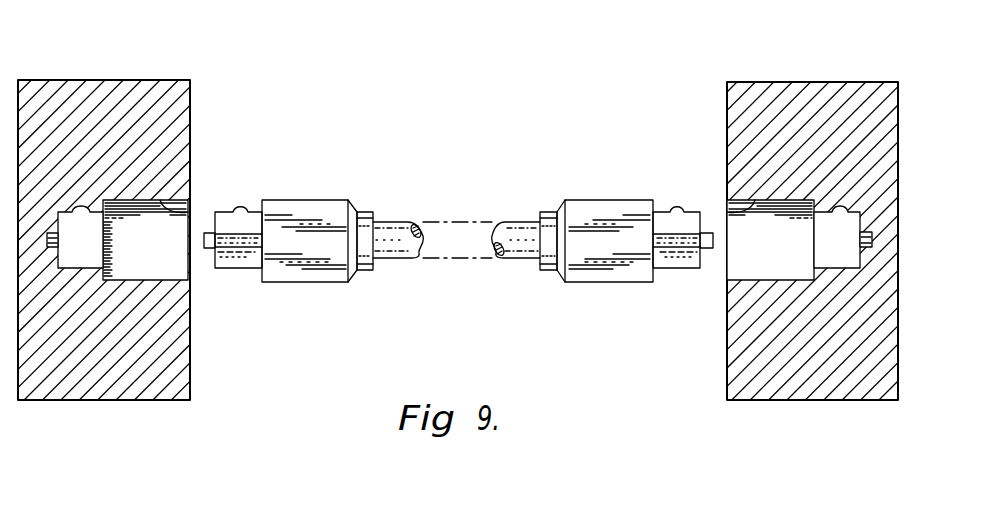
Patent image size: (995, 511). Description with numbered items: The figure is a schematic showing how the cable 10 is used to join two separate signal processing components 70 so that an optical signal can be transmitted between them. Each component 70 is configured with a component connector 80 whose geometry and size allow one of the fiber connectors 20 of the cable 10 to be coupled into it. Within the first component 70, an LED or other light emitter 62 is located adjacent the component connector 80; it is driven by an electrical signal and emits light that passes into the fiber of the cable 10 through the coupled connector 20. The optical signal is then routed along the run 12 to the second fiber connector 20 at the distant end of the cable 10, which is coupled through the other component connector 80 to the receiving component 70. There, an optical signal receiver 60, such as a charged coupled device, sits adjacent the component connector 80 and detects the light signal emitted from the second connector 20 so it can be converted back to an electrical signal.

The cable 10 is at (387, 104).
The run 12 is at (397, 255).
The fiber connector 20 is at (309, 200).
The optical signal receiver 60 is at (828, 270).
The LED or other light emitter 62 is at (84, 268).
The signal processing component 70 is at (68, 88).
The component connector 80 is at (184, 214).